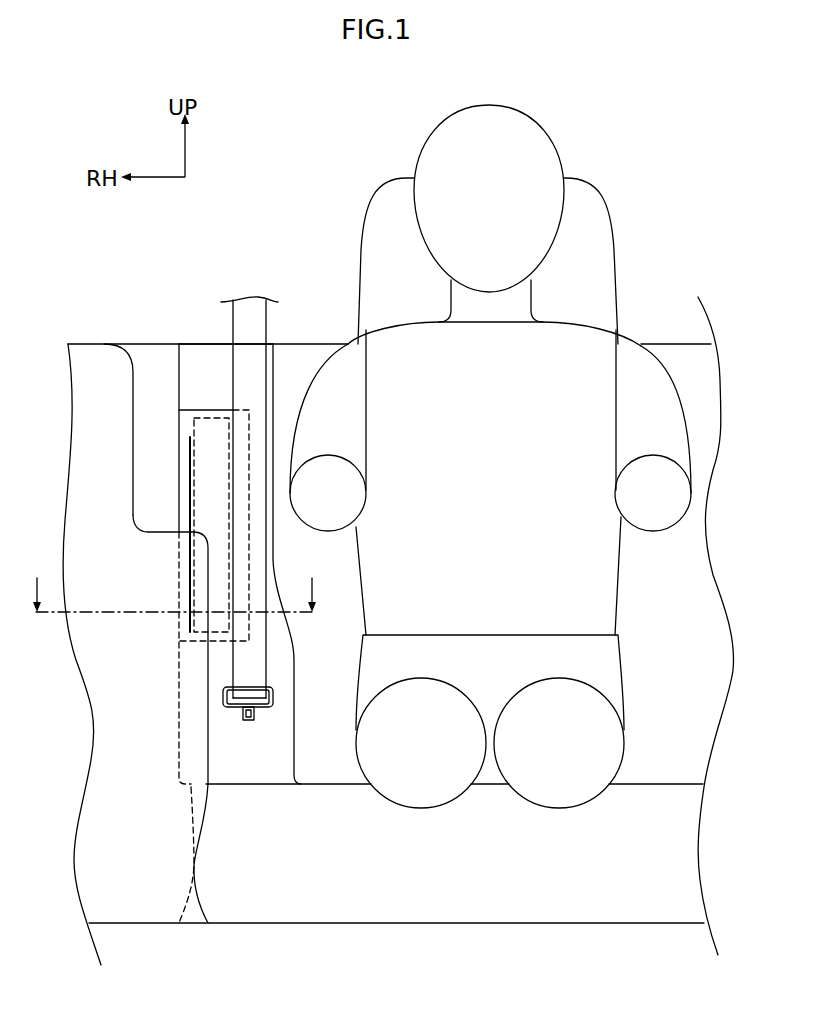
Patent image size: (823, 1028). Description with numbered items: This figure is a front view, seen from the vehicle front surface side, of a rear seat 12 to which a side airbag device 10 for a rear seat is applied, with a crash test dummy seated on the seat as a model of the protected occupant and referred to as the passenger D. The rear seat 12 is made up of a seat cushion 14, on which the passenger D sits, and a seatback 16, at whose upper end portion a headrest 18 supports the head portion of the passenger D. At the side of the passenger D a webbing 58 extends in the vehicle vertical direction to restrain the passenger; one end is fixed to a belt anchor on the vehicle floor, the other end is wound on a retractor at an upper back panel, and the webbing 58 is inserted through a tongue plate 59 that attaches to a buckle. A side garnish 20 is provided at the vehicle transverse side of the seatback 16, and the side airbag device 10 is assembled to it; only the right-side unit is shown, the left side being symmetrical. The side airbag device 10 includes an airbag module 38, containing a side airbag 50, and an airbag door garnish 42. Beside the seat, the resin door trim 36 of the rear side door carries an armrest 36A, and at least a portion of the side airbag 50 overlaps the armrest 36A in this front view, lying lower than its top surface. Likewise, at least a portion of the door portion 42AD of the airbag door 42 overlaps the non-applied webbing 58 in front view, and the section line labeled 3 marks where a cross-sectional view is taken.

The side airbag device for a rear seat 10 is at (192, 336).
The rear seat 12 is at (665, 343).
The seat cushion 14 is at (645, 923).
The seatback 16 is at (690, 553).
The headrest 18 is at (612, 224).
The side garnish 20 is at (185, 375).
The door trim 36 is at (92, 343).
The armrest 36A is at (167, 532).
The airbag module 38 is at (136, 520).
The airbag door garnish 42 is at (208, 410).
The door portion 42AD is at (215, 432).
The side airbag 50 is at (190, 437).
The webbing 58 is at (265, 653).
The tongue plate 59 is at (272, 699).
The section line 3- 3 is at (174, 582).
The passenger D is at (419, 146).